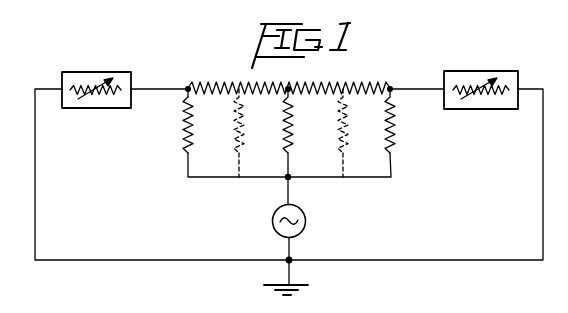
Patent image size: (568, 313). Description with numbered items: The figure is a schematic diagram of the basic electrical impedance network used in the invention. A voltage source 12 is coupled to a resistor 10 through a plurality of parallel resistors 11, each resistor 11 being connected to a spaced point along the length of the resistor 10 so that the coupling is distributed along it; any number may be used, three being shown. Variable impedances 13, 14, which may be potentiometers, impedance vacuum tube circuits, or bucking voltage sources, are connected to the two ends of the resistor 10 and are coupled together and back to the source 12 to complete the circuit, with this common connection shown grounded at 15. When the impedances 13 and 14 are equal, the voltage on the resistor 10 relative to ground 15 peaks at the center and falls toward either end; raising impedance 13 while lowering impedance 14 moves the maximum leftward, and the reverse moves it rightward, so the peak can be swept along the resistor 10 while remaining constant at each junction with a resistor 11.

The resistor 10 is at (323, 77).
The parallel resistors 11 is at (183, 135).
The voltage source 12 is at (272, 220).
The variable impedance 13 is at (72, 71).
The variable impedance 14 is at (468, 75).
The ground 15 is at (291, 258).